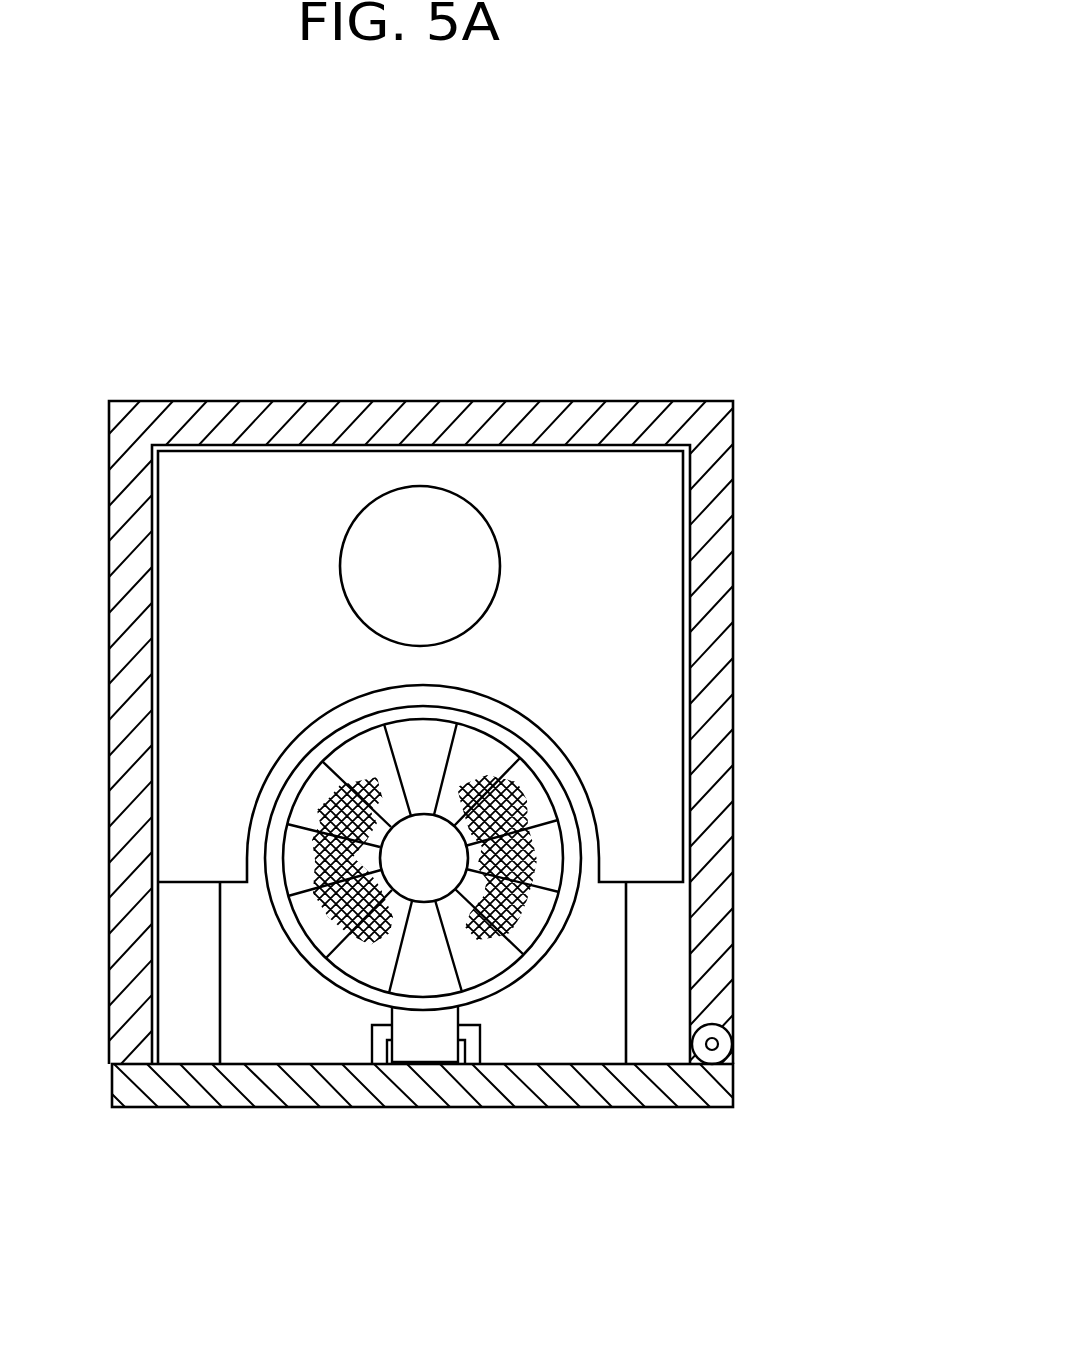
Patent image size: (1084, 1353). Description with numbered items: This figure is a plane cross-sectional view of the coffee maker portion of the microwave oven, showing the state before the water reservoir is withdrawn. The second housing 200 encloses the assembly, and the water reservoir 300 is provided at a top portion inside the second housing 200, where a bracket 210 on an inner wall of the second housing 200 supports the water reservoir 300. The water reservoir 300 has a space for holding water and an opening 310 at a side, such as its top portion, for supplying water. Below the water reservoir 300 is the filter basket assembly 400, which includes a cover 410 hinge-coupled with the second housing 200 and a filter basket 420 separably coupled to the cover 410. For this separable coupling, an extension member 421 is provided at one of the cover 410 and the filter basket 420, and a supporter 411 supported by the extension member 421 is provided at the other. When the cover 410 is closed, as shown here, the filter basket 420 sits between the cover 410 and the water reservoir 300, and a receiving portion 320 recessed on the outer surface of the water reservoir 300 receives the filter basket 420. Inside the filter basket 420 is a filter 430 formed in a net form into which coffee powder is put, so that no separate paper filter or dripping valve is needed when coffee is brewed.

The second housing 200 is at (736, 546).
The bracket 210 is at (188, 985).
The water reservoir 300 is at (655, 703).
The opening 310 is at (416, 522).
The receiving portion 320 is at (558, 778).
The filter basket assembly 400 is at (444, 1157).
The cover 410 is at (553, 1088).
The supporter 411 is at (372, 1047).
The filter basket 420 is at (570, 928).
The extension member 421 is at (427, 1040).
The filter 430 is at (522, 848).